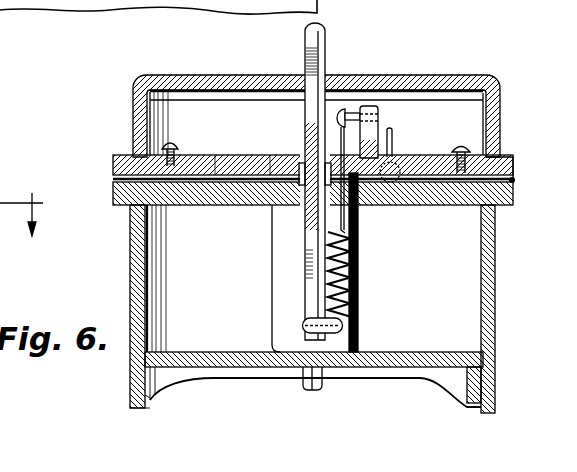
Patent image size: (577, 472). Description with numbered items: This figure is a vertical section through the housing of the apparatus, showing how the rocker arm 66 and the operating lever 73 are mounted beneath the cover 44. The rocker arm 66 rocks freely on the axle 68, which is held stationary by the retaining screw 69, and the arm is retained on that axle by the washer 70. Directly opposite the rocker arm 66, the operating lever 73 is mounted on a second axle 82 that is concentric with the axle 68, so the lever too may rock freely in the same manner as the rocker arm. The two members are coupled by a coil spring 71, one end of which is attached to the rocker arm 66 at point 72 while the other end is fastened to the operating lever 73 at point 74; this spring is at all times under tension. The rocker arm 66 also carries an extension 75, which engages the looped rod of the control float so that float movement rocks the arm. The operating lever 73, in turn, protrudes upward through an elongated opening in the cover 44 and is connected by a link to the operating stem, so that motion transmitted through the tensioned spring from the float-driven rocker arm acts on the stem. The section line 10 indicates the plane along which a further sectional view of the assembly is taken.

The section line 10 is at (27, 219).
The cover 44 is at (212, 76).
The rocker arm 66 is at (380, 112).
The axle 68 is at (497, 158).
The retaining screw 69 is at (463, 142).
The washer 70 is at (358, 192).
The coil spring 71 is at (357, 270).
The spring attachment point on rocker arm 72 is at (345, 110).
The operating lever 73 is at (323, 47).
The spring attachment point on operating lever 74 is at (347, 335).
The extension 75 is at (392, 142).
The axle 82 is at (244, 156).